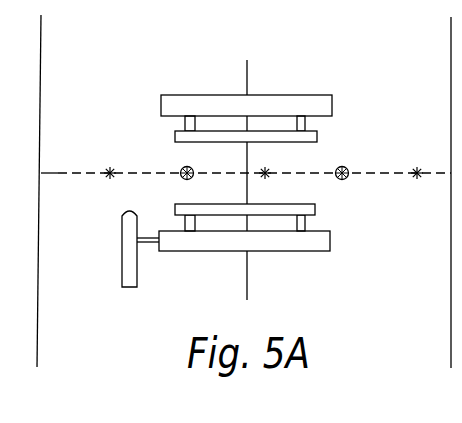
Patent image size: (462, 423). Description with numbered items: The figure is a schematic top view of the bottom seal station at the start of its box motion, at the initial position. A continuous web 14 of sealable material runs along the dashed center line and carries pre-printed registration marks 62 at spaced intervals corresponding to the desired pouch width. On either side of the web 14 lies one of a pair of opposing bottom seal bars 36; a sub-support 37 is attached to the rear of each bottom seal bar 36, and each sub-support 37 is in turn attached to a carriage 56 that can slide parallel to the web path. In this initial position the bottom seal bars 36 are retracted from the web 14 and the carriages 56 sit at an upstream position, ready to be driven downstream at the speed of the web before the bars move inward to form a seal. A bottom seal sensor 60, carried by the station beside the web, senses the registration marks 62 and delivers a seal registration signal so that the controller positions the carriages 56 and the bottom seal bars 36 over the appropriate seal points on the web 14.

The web 14 is at (55, 175).
The bottom seal bar 36 is at (317, 139).
The sub-support 37 is at (306, 128).
The carriage 56 is at (288, 103).
The bottom seal sensor 60 is at (127, 268).
The registration mark 62 is at (181, 170).